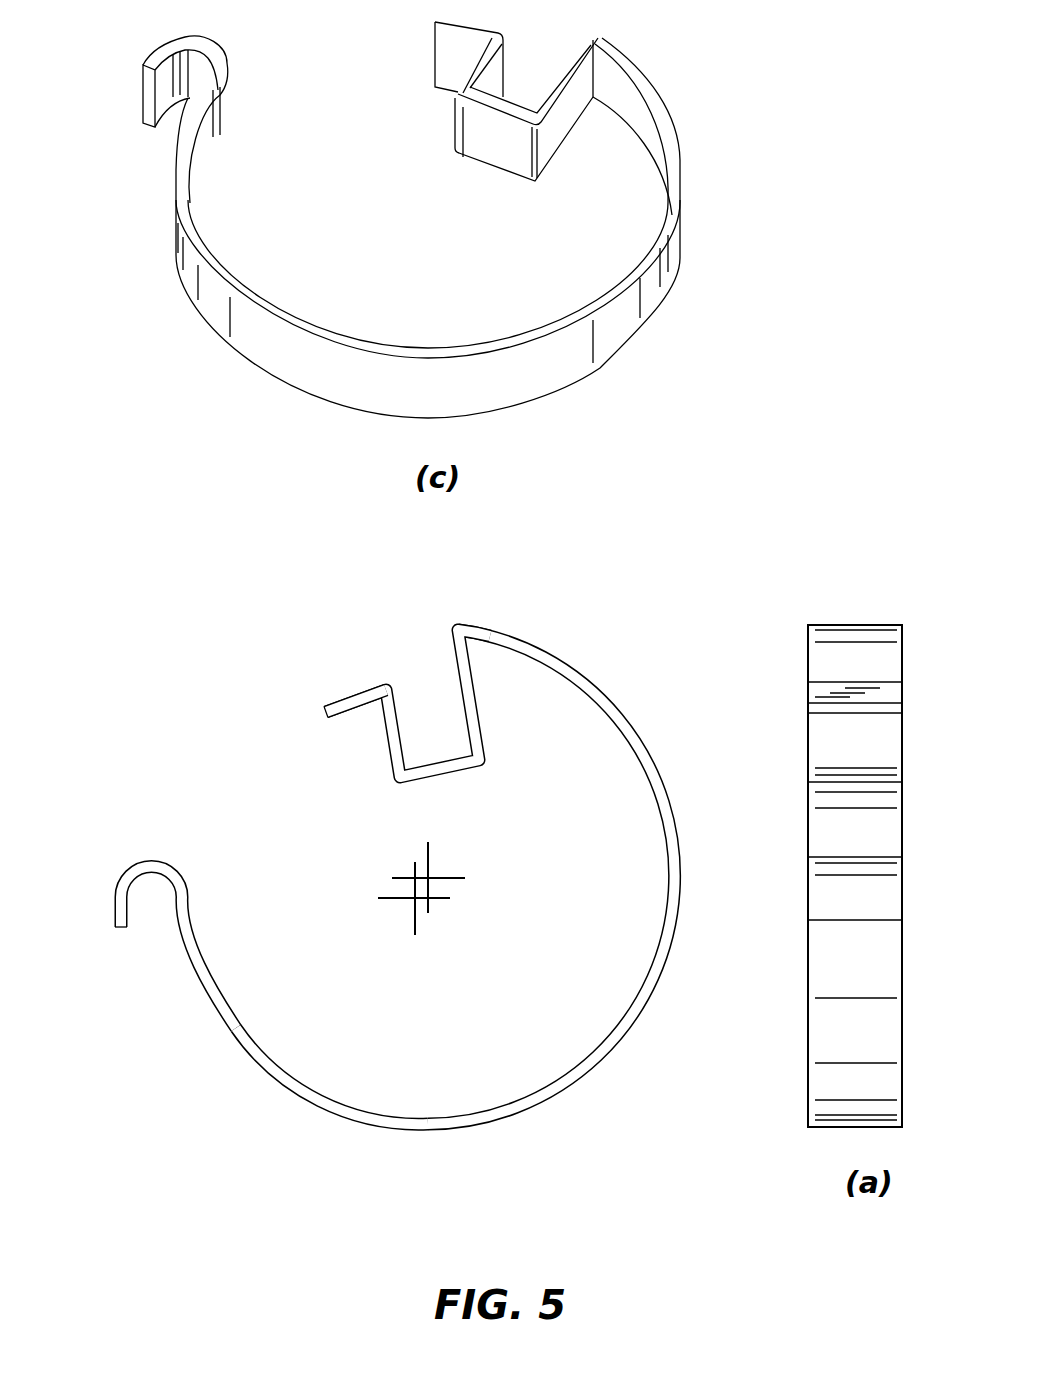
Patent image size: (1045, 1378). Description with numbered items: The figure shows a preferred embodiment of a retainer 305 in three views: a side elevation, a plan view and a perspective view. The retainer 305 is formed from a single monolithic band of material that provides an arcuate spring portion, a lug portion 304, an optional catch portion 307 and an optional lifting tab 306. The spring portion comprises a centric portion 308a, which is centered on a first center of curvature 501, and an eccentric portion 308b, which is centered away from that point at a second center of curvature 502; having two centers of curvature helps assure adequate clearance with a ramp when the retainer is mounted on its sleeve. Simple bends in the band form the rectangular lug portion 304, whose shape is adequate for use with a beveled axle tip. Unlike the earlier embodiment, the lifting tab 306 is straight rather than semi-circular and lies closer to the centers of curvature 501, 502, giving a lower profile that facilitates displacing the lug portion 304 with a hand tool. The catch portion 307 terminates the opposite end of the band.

The lug portion 304 is at (497, 768).
The retainer 305 is at (385, 889).
The lifting tab 306 is at (348, 687).
The catch portion 307 is at (133, 852).
The centric portion 308a is at (291, 1102).
The eccentric portion 308b is at (506, 624).
The first center of curvature 501 is at (415, 898).
The second center of curvature 502 is at (428, 878).